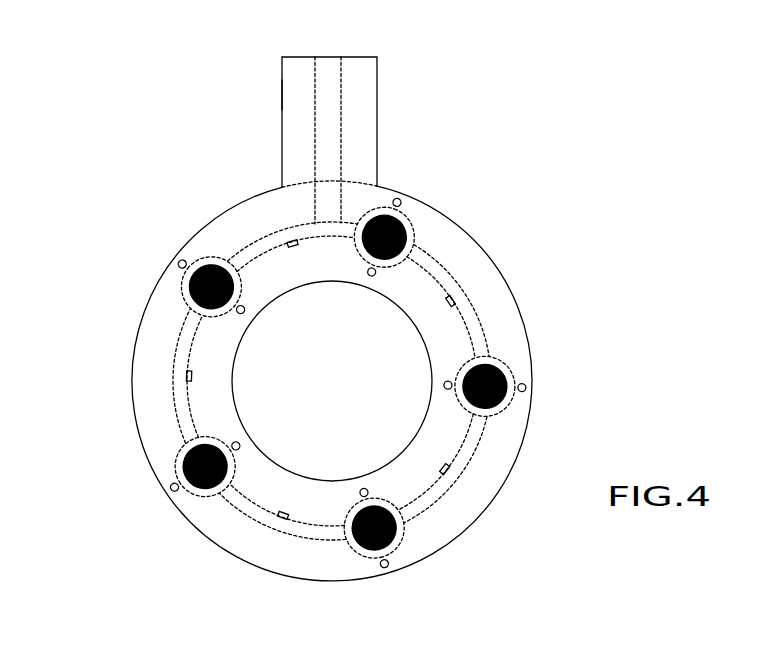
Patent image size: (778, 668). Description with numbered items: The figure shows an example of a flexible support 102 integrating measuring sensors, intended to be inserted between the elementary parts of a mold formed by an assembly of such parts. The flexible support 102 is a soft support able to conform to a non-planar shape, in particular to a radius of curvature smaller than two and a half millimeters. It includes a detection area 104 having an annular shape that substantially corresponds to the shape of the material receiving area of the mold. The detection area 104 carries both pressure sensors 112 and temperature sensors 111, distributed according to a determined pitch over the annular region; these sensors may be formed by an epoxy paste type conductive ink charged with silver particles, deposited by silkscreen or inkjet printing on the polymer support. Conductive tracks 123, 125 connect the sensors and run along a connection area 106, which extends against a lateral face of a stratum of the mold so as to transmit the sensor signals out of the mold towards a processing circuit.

The flexible support 102 is at (538, 194).
The detection area 104 is at (152, 412).
The connection area 106 is at (365, 141).
The temperature sensors 111 is at (288, 244).
The pressure sensors 112 is at (402, 226).
The conductive track 123 is at (330, 68).
The conductive track 125 is at (296, 92).